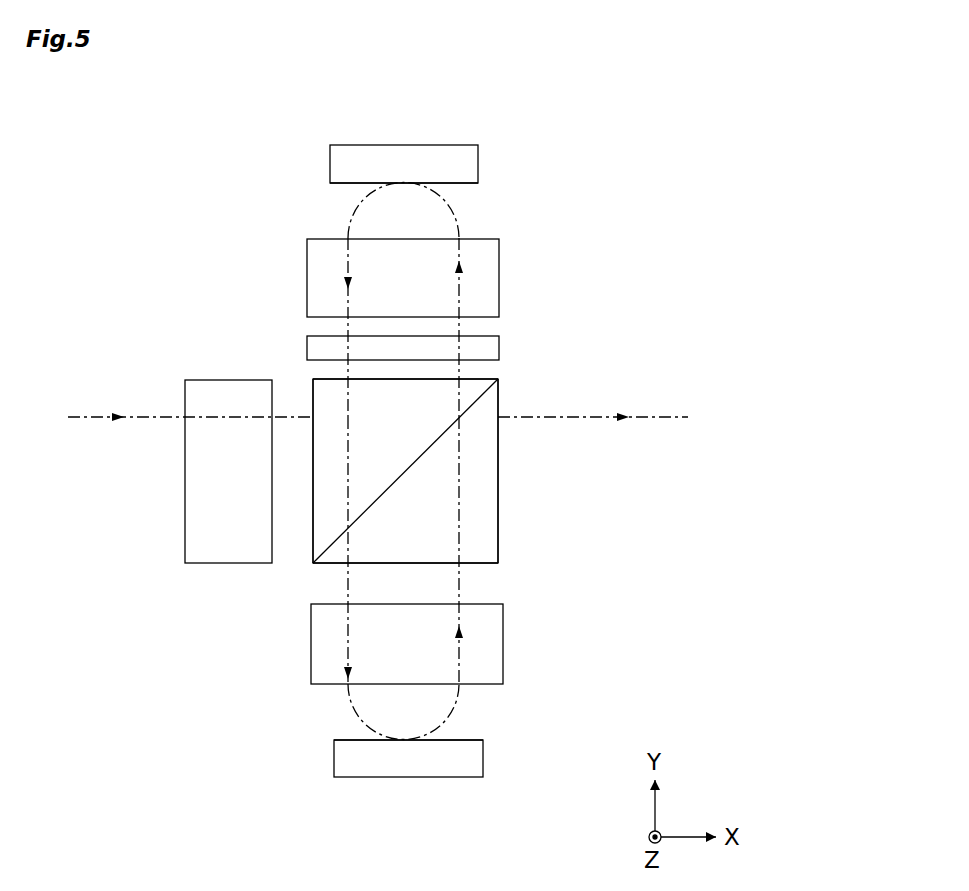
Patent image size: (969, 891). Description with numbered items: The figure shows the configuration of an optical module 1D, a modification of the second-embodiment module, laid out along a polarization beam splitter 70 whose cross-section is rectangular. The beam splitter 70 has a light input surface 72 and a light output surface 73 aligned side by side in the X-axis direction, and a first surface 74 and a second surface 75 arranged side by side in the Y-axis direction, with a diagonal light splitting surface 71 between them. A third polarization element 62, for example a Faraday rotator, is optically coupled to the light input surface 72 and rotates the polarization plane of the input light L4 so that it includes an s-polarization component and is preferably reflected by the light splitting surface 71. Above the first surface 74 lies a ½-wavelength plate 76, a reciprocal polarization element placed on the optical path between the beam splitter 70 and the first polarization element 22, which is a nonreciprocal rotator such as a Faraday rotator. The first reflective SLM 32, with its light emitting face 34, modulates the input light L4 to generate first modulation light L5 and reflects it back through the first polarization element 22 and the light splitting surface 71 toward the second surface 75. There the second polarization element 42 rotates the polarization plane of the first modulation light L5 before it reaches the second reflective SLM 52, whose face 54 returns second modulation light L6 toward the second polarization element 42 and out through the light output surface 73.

The optical module 1D is at (652, 165).
The first reflective SLM 32 is at (405, 143).
The light emitting surface 34 is at (460, 184).
The first modulation light L5 is at (348, 220).
The first polarization element 22 is at (307, 282).
The input light L4 is at (459, 294).
The ½-wavelength plate 76 is at (499, 348).
The polarization beam splitter 70 is at (416, 475).
The first surface 74 is at (495, 378).
The light splitting surface 71 is at (422, 455).
The light output surface 73 is at (499, 518).
The second surface 75 is at (483, 564).
The light input surface 72 is at (313, 543).
The third polarization element 62 is at (217, 565).
The second polarization element 42 is at (310, 648).
The second modulation light L6 is at (462, 668).
The second reflective SLM 52 is at (413, 778).
The light emitting surface 54 is at (467, 740).